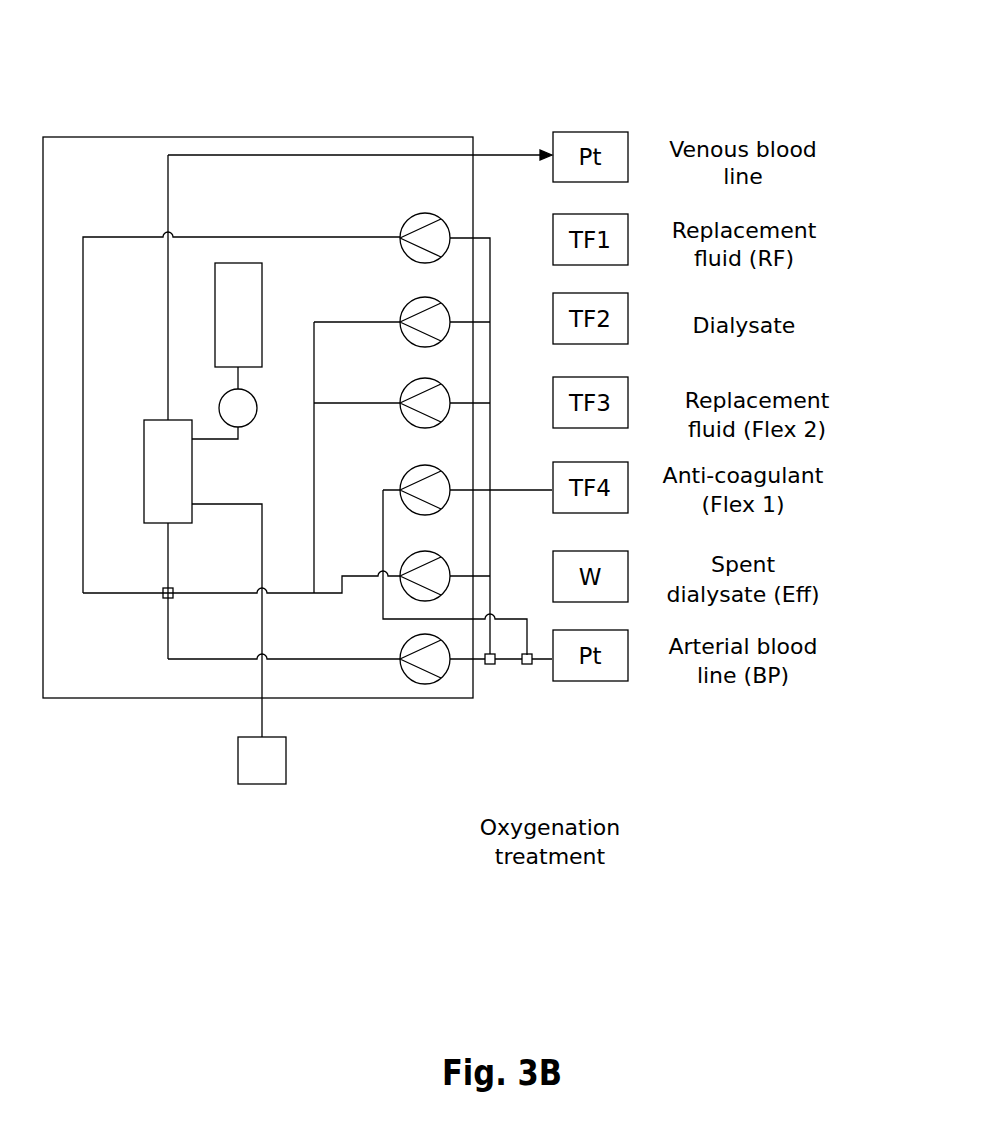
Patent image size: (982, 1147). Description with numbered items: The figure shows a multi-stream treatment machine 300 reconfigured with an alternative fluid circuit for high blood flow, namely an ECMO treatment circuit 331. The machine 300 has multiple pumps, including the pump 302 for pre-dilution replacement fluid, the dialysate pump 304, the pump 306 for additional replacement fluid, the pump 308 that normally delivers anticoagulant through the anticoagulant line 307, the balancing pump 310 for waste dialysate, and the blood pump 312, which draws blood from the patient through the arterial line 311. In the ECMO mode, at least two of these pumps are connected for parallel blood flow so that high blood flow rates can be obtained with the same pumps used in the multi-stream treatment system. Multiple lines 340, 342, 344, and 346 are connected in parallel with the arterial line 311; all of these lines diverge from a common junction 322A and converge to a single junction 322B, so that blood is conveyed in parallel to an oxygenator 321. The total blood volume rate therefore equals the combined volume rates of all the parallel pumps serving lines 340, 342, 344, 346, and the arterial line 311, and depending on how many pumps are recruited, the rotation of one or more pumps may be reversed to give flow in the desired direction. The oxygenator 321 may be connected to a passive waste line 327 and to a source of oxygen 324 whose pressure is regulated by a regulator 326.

The multi-stream treatment machine 300 is at (127, 674).
The ECMO treatment circuit 331 is at (360, 86).
The pump 302 is at (474, 223).
The dialysate pump 304 is at (474, 304).
The pump 306 is at (472, 386).
The pump 308 is at (472, 471).
The balancing pump 310 is at (474, 557).
The blood pump 312 is at (474, 641).
The anticoagulant line 307 is at (435, 559).
The arterial line 311 is at (284, 630).
The oxygenator 321 is at (156, 432).
The source of oxygen 324 is at (236, 277).
The regulator 326 is at (240, 425).
The passive waste line 327 is at (239, 644).
The common junction 322A is at (520, 687).
The single junction 322B is at (197, 619).
The line 340 is at (241, 387).
The line 342 is at (356, 293).
The line 344 is at (357, 374).
The line 346 is at (241, 457).